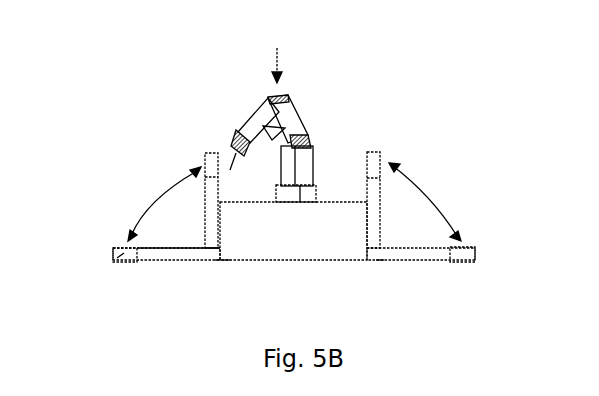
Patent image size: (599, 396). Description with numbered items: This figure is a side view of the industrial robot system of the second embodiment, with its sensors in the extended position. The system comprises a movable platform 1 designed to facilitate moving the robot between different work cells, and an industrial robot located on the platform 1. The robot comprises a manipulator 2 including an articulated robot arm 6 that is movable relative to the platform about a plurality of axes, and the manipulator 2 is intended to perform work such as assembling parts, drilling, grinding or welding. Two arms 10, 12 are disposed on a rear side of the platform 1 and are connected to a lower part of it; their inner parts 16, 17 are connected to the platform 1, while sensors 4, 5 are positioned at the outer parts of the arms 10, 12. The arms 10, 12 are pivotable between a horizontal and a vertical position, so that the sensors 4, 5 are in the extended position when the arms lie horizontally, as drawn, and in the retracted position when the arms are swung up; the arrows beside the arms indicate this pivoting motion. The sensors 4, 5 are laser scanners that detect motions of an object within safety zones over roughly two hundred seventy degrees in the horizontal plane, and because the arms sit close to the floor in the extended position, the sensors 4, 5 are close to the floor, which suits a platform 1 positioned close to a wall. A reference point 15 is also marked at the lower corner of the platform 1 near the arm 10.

The platform 1 is at (327, 216).
The manipulator 2 is at (278, 54).
The sensor 4 is at (113, 259).
The sensor 5 is at (462, 257).
The articulated robot arm 6 is at (304, 117).
The arm 10 is at (153, 267).
The arm 12 is at (444, 268).
The body lower corner 15 is at (226, 262).
The inner part of arm 16 is at (218, 262).
The inner part of arm 17 is at (384, 263).